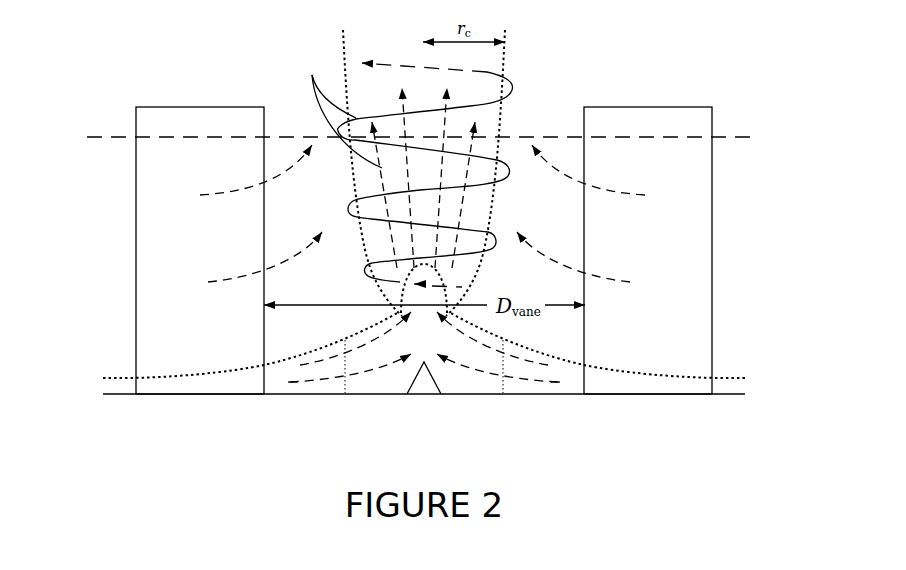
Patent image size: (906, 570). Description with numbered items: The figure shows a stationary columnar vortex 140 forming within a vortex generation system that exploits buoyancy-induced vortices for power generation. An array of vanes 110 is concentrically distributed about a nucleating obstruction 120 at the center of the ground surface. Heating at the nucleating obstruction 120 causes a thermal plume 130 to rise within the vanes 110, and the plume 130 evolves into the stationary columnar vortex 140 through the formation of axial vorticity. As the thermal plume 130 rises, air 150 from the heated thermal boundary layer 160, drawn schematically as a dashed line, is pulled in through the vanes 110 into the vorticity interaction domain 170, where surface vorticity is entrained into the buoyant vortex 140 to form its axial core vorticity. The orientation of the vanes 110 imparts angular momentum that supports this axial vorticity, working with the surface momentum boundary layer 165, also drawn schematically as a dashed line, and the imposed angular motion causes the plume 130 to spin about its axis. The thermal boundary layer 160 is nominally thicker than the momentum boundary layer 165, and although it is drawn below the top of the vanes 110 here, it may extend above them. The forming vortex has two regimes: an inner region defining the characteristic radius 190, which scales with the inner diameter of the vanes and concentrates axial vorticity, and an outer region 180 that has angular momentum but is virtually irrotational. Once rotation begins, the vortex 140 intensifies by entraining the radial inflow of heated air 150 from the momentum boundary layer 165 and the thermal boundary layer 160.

The vanes 110 is at (233, 106).
The nucleating obstruction 120 is at (424, 388).
The thermal plume 130 is at (339, 108).
The stationary columnar vortex 140 is at (376, 46).
The air from the heated thermal boundary layer 150 is at (292, 384).
The thermal boundary layer 160 is at (116, 137).
The surface momentum boundary layer 165 is at (170, 381).
The vorticity interaction domain 170 is at (383, 389).
The outer region 180 is at (296, 119).
The characteristic radius 190 is at (508, 75).